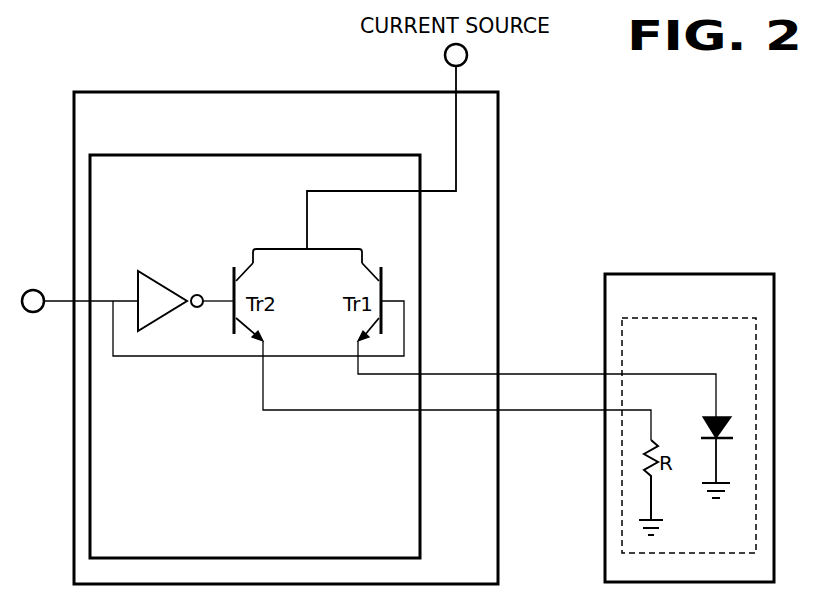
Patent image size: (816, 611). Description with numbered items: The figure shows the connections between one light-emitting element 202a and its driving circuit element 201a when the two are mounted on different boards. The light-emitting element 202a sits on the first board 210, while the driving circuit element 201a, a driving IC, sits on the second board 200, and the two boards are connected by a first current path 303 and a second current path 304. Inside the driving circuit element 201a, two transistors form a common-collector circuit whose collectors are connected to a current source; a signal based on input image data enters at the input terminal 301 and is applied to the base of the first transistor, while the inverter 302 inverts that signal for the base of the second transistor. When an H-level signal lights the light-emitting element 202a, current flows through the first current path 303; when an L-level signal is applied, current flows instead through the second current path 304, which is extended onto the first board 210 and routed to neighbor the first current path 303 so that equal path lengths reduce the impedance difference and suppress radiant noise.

The second board 200 is at (107, 92).
The driving circuit element 201a is at (383, 155).
The light-emitting element 202a is at (735, 318).
The first board 210 is at (622, 274).
The input terminal 301 is at (33, 290).
The inverter 302 is at (192, 260).
The first current path 303 is at (545, 374).
The second current path 304 is at (550, 410).